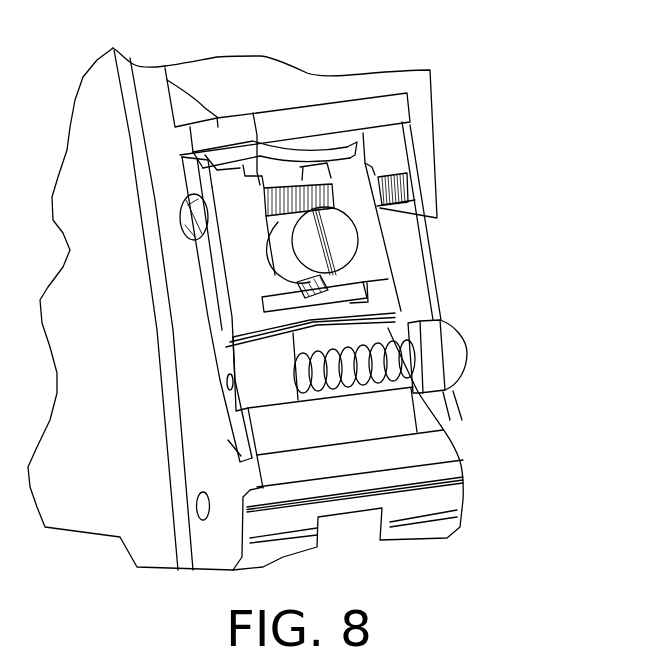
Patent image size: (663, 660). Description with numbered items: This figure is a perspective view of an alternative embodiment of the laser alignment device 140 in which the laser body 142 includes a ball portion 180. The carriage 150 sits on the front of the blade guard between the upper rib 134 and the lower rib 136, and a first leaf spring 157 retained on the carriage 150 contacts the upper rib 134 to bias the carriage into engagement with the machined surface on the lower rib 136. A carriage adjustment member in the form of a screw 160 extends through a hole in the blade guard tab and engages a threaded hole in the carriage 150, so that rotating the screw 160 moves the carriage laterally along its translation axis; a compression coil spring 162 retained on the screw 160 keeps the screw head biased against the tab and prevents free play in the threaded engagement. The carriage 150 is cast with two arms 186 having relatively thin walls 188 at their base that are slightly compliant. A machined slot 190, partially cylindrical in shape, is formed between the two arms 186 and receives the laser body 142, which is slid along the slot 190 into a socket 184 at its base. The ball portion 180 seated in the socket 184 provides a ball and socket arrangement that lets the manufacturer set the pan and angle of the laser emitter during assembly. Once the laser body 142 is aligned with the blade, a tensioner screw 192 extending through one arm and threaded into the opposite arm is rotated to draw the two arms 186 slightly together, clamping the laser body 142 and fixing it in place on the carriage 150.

The upper rib 134 is at (154, 72).
The lower rib 136 is at (327, 463).
The laser alignment device 140 is at (202, 448).
The laser body 142 is at (343, 233).
The carriage 150 is at (367, 175).
The first leaf spring 157 is at (253, 138).
The screw 160 is at (466, 342).
The compression coil spring 162 is at (453, 460).
The ball portion 180 is at (350, 272).
The socket 184 is at (233, 341).
The arms 186 is at (378, 209).
The thin walls 188 is at (380, 290).
The machined slot 190 is at (287, 170).
The screw 192 is at (317, 177).